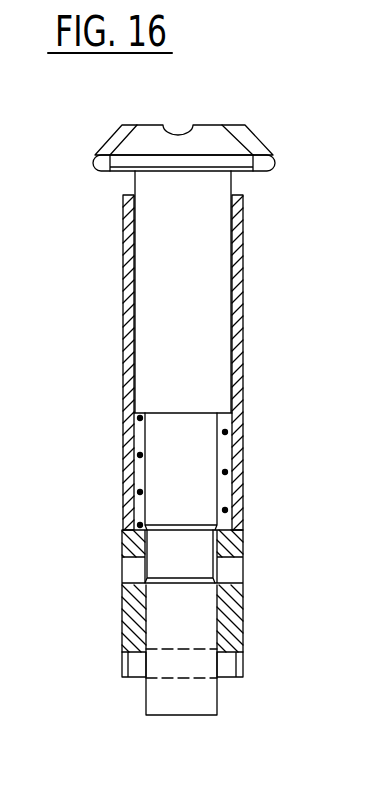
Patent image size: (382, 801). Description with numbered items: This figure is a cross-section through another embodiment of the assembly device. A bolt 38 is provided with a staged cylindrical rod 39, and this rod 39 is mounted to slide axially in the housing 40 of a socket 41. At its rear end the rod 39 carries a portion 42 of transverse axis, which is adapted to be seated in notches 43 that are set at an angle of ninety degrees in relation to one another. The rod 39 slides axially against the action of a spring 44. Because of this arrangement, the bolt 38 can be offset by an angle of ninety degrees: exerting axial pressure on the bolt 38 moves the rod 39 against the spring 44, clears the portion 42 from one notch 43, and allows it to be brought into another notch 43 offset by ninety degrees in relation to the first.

The bolt 38 is at (237, 148).
The staged cylindrical rod 39 is at (192, 320).
The housing 40 is at (138, 440).
The socket 41 is at (242, 358).
The portion of transverse axis 42 is at (228, 668).
The notches 43 is at (123, 667).
The spring 44 is at (228, 473).